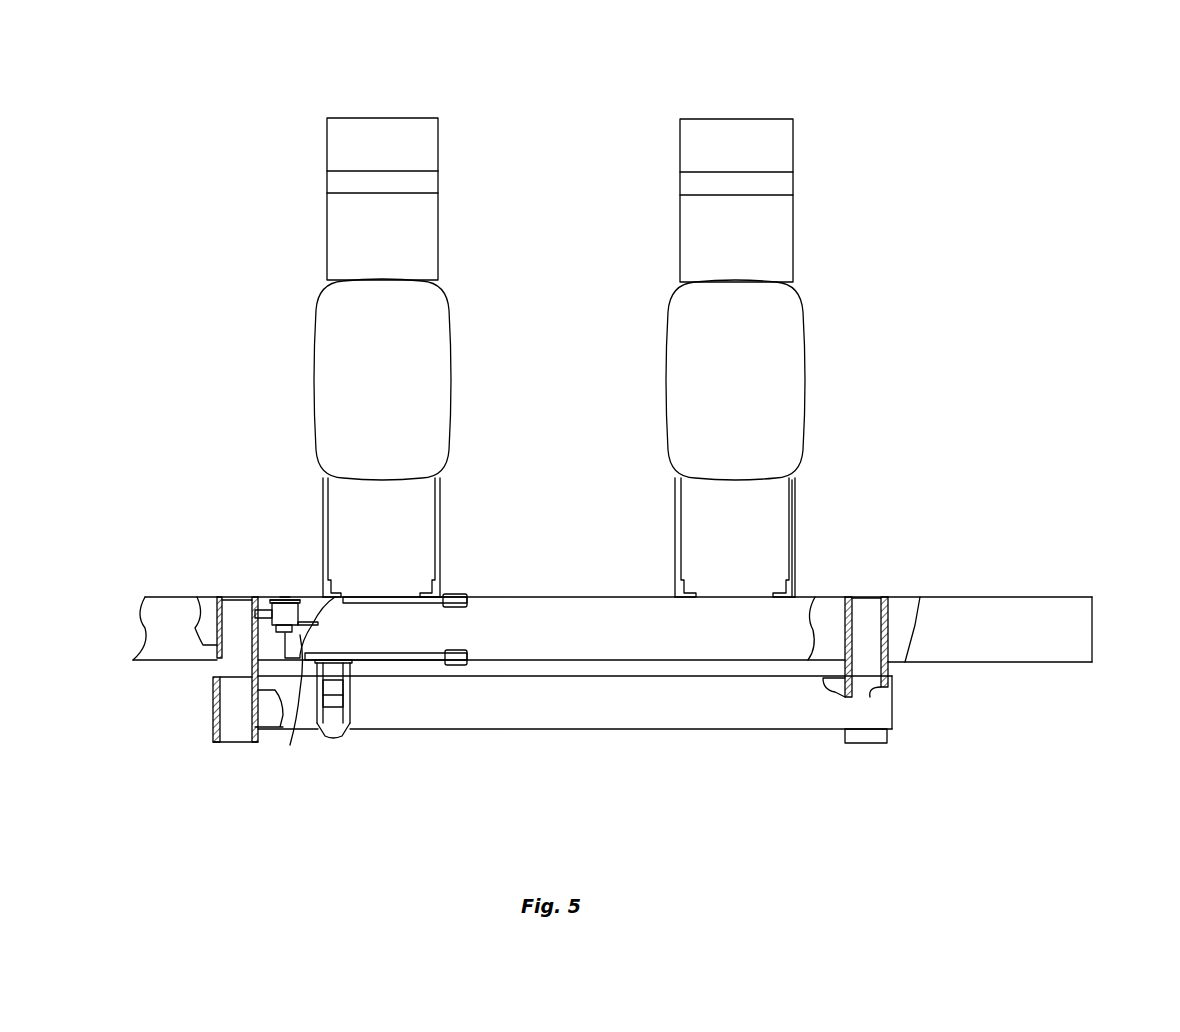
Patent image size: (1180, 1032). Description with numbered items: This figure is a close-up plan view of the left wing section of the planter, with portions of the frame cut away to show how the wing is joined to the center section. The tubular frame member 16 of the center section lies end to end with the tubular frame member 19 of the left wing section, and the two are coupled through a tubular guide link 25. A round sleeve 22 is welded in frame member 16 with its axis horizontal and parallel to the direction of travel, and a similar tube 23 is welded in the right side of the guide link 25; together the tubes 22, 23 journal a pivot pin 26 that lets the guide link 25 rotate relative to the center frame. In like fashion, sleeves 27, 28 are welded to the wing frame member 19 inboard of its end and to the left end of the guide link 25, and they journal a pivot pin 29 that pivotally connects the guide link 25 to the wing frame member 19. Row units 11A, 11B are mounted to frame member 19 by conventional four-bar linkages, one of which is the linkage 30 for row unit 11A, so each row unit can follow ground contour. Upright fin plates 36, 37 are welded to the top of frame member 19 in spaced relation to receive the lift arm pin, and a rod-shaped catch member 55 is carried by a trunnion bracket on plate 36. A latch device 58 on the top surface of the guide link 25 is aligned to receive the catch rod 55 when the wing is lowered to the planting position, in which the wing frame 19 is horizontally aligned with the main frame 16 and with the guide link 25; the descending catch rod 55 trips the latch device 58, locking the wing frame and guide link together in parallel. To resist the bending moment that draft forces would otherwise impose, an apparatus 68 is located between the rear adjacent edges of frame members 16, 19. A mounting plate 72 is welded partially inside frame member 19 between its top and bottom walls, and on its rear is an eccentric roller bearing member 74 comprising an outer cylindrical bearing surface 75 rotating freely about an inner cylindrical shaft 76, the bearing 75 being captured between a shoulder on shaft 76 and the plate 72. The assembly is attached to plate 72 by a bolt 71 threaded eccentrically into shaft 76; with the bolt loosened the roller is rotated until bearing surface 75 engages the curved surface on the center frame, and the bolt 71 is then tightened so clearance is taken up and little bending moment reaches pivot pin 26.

The row unit 11A is at (722, 118).
The row unit 11B is at (362, 118).
The frame member of the center frame section 16 is at (150, 598).
The tubular frame member of the left wing section 19 is at (530, 608).
The sleeve 22 is at (217, 598).
The tube 23 is at (248, 740).
The guide link 25 is at (700, 730).
The pivot pin 26 is at (230, 737).
The sleeve 27 is at (848, 598).
The sleeve 28 is at (878, 700).
The pivot pin 29 is at (863, 610).
The four-bar linkage 30 is at (797, 520).
The fin plate 36 is at (400, 660).
The fin plate 37 is at (437, 600).
The catch member 55 is at (352, 723).
The latch device 58 is at (317, 727).
The apparatus 68 is at (257, 583).
The bolt 71 is at (275, 640).
The mounting plate 72 is at (315, 600).
The eccentric roller bearing member 74 is at (278, 598).
The outer cylindrical bearing surface 75 is at (265, 615).
The inner cylindrical shaft 76 is at (297, 690).